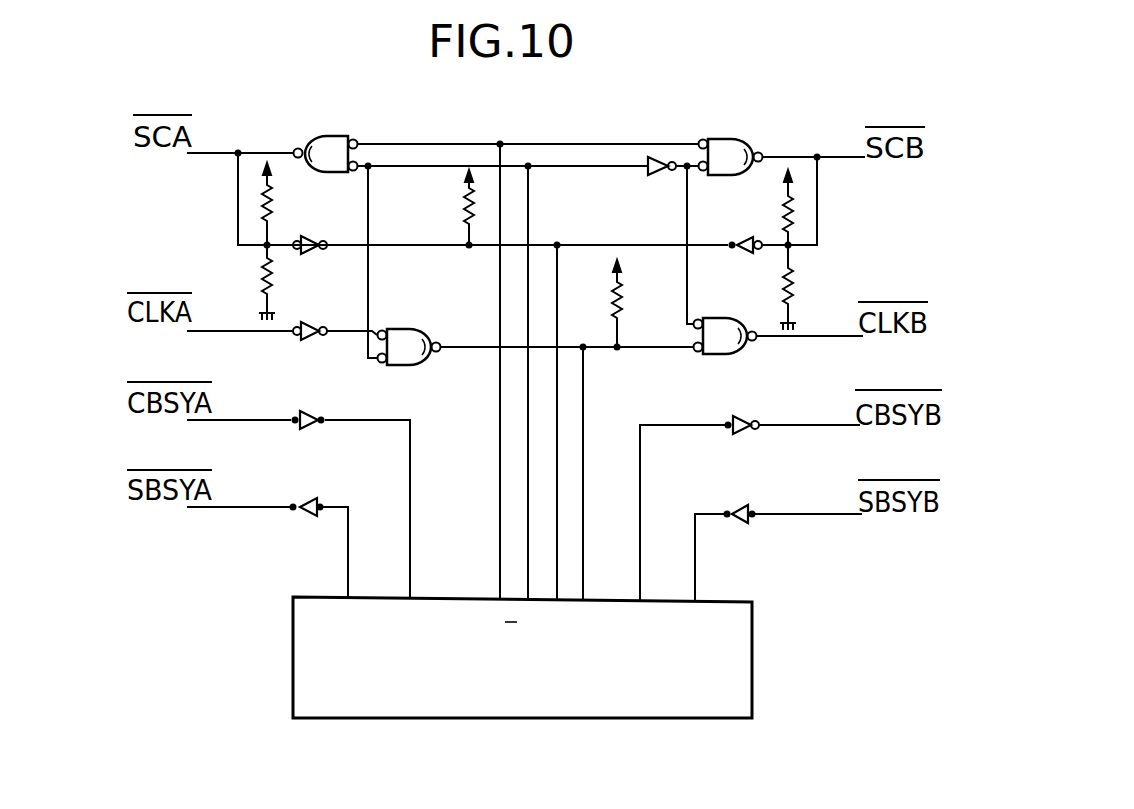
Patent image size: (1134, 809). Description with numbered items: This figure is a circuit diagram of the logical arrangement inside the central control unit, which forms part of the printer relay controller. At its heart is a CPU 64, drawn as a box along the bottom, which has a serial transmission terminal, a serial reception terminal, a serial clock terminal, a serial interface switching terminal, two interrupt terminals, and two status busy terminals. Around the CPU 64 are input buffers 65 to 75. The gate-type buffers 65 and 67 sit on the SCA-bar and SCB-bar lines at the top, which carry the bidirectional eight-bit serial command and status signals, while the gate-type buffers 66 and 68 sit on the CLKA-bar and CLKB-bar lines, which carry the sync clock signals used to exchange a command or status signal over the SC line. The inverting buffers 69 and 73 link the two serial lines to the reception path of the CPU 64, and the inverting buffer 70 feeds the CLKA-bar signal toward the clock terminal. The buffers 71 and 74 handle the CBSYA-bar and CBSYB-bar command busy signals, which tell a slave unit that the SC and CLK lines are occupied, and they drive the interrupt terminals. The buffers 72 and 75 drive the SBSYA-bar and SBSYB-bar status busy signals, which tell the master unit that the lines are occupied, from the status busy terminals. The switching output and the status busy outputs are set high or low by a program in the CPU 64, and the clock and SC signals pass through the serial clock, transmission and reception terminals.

The CPU 64 is at (752, 668).
The input buffer 65 is at (330, 136).
The input buffer 66 is at (418, 329).
The input buffer 67 is at (716, 138).
The input buffer 68 is at (718, 318).
The input buffer 69 is at (316, 236).
The input buffer 70 is at (312, 326).
The input buffer 71 is at (312, 415).
The input buffer 72 is at (310, 500).
The input buffer 73 is at (742, 238).
The input buffer 74 is at (742, 419).
The input buffer 75 is at (740, 508).